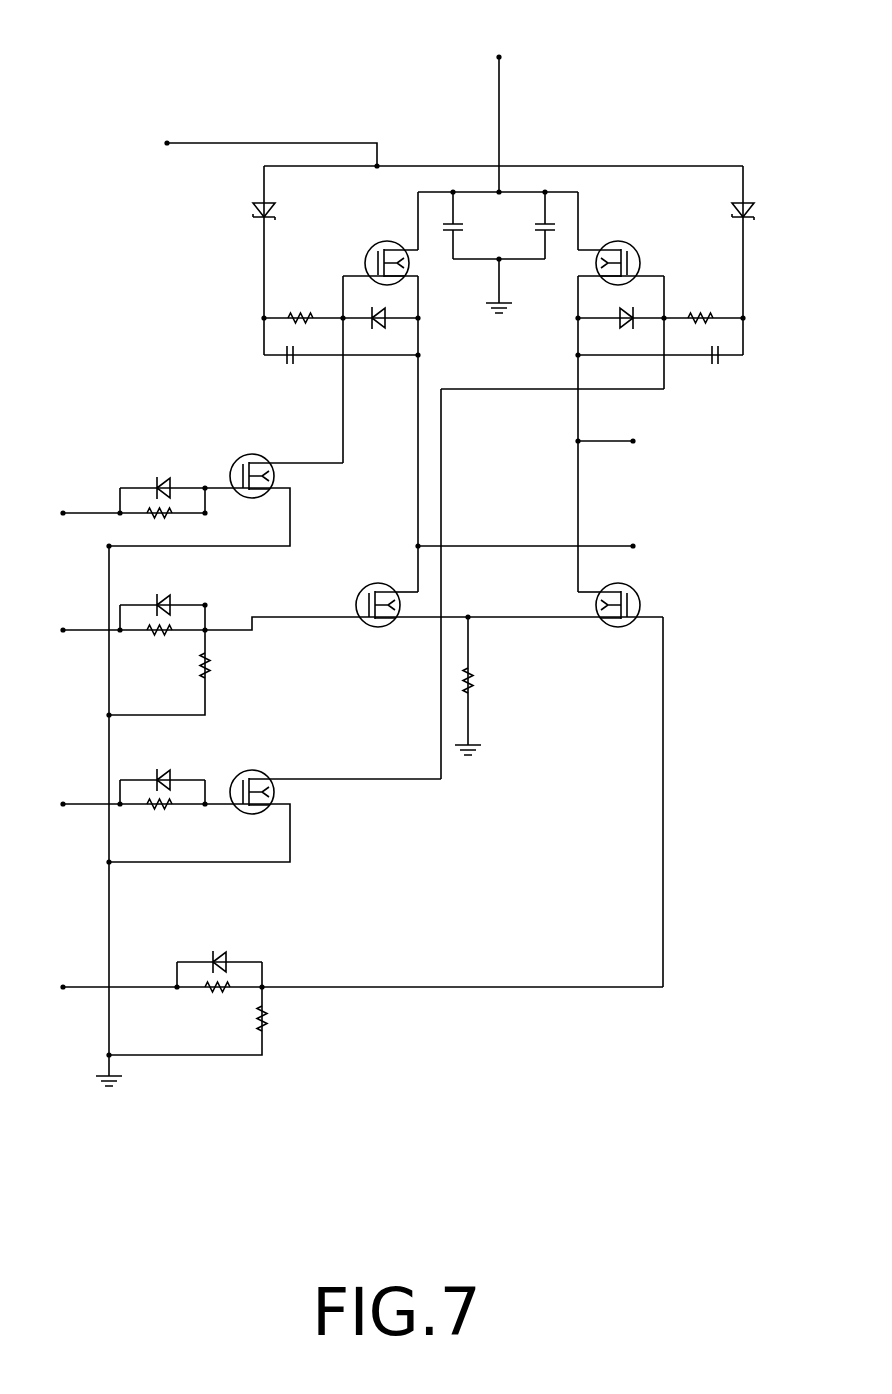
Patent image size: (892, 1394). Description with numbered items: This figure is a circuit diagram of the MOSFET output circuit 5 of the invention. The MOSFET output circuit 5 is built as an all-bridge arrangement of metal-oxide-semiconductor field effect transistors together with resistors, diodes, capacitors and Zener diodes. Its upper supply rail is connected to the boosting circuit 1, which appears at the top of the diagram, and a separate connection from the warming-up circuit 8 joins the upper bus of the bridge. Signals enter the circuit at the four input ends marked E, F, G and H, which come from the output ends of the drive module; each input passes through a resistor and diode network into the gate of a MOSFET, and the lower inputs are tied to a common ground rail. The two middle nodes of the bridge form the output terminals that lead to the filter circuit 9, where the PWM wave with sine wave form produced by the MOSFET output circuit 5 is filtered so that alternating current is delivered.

The boosting circuit 1 is at (499, 57).
The MOSFET output circuit 5 is at (448, 997).
The warming-up circuit 8 is at (167, 143).
The filter circuit 9 is at (633, 441).